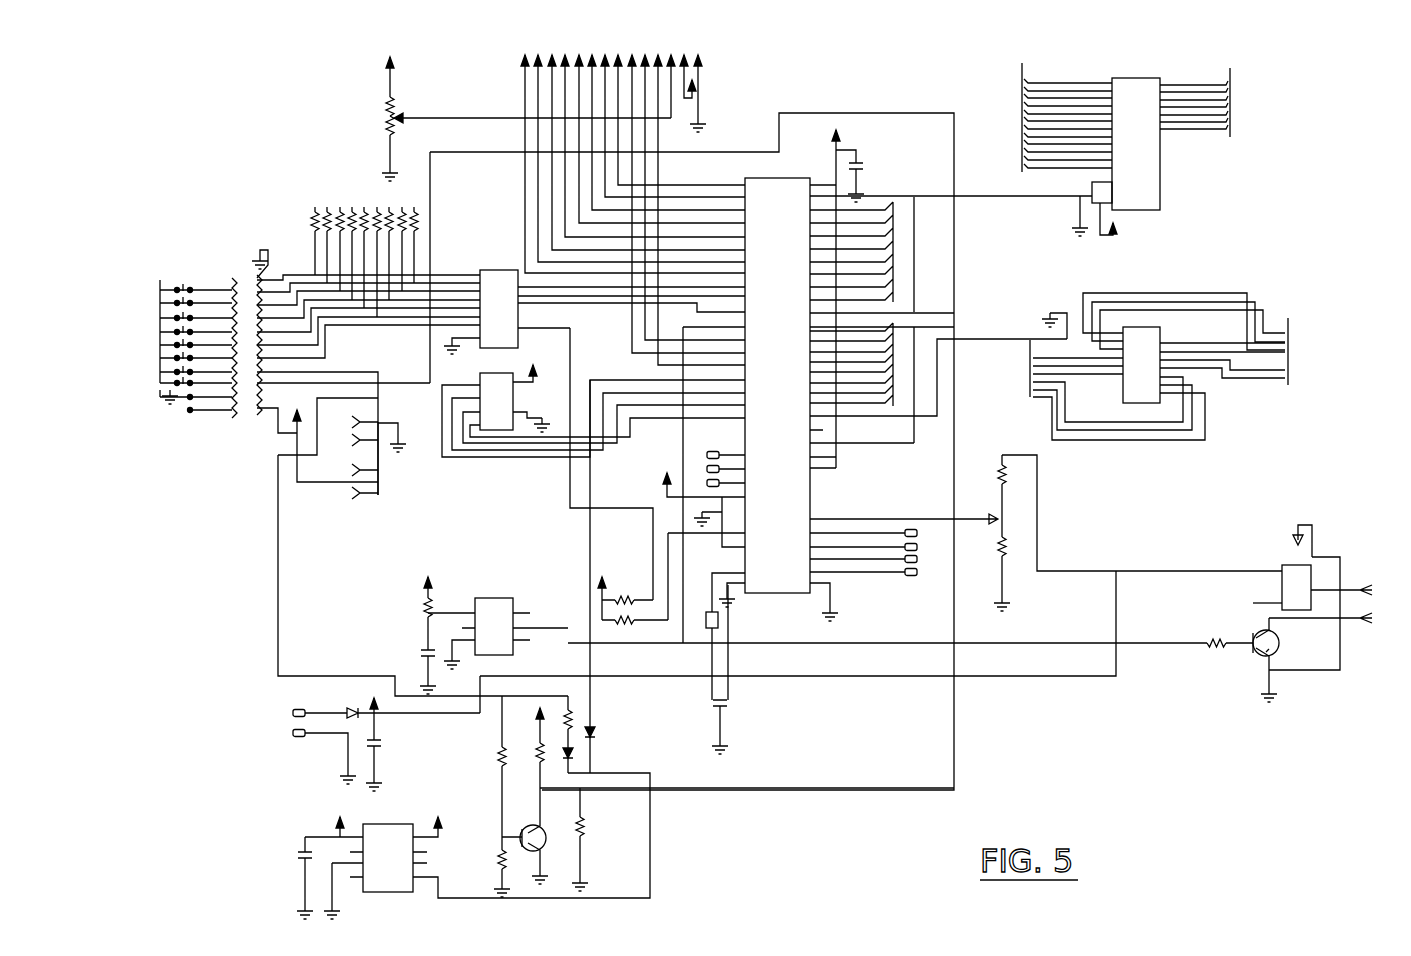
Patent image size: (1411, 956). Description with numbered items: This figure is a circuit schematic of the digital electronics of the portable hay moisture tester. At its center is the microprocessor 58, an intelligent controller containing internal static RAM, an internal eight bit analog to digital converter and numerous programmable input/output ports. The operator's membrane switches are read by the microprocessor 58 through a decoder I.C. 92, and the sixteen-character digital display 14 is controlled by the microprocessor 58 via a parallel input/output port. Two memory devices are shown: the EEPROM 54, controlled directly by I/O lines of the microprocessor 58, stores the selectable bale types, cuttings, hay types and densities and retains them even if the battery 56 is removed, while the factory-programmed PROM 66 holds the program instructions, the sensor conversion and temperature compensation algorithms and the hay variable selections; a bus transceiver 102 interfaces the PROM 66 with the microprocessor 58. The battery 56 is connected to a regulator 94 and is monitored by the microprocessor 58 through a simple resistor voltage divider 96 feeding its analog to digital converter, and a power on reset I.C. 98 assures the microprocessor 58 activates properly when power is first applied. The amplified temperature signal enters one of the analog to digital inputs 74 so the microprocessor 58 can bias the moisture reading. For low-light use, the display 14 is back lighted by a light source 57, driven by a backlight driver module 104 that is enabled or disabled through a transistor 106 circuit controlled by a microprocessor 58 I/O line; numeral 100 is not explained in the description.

The digital display 14 is at (516, 55).
The EEPROM 54 is at (490, 432).
The battery 56 is at (286, 760).
The light source 57 is at (1368, 532).
The microprocessor 58 is at (793, 371).
The Programmable Read Only Memory 66 is at (1155, 78).
The analog to digital inputs 74 is at (852, 577).
The decoder I.C. 92 is at (498, 270).
The regulator 94 is at (386, 824).
The resistor voltage divider 96 is at (1012, 548).
The power on reset I.C. 98 is at (497, 598).
The display driver 100 is at (1140, 210).
The bus transceiver 102 is at (1160, 340).
The backlight driver module 104 is at (1280, 582).
The transistor 106 is at (1258, 652).